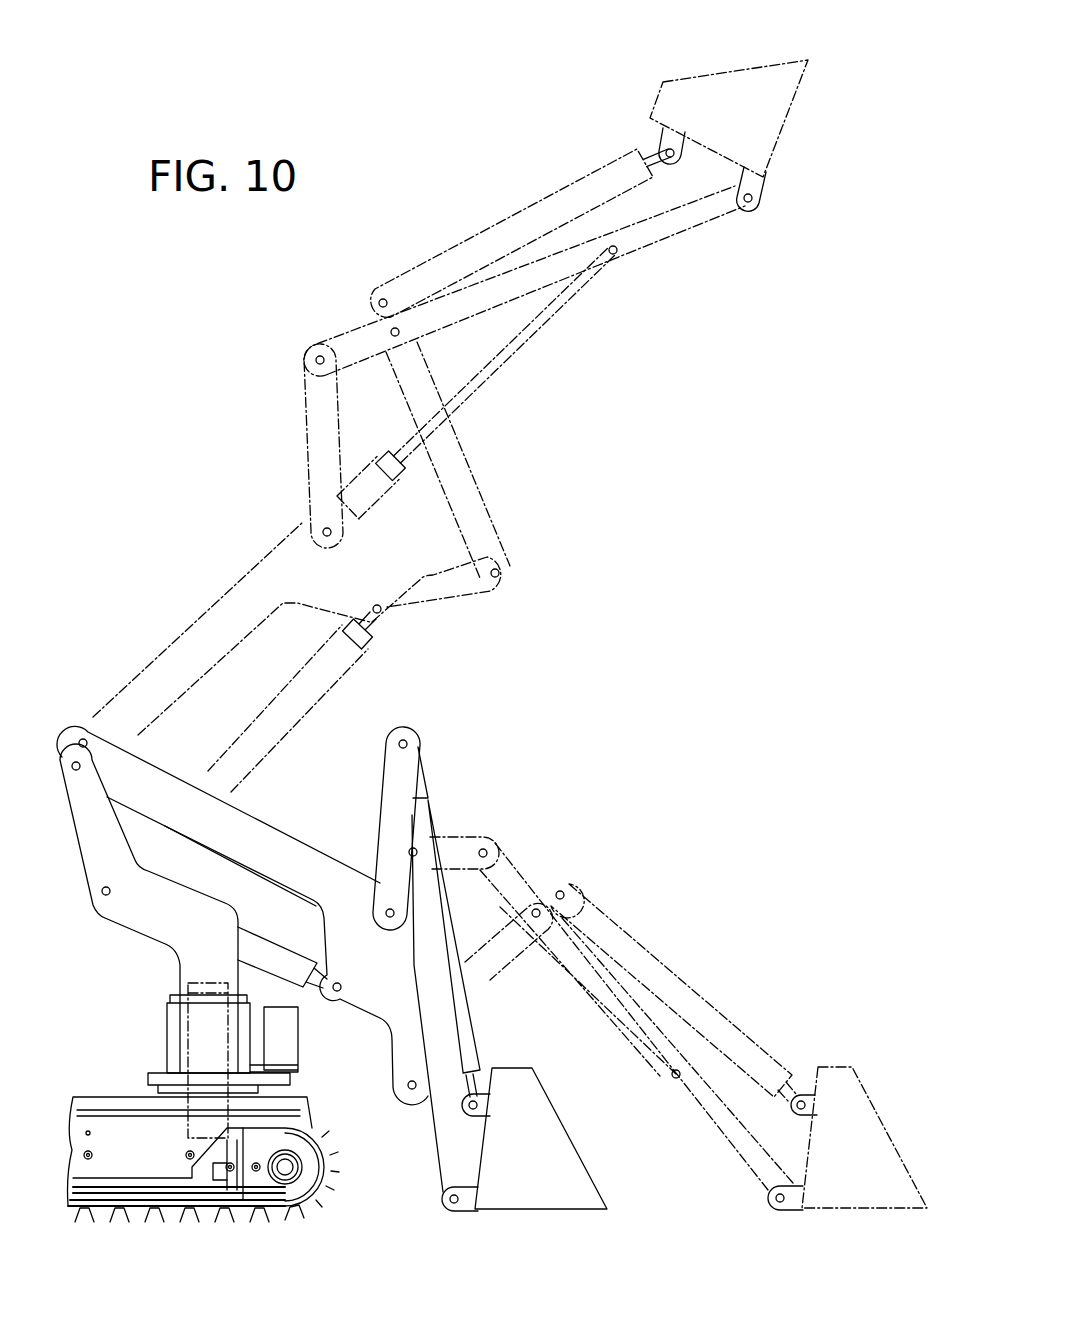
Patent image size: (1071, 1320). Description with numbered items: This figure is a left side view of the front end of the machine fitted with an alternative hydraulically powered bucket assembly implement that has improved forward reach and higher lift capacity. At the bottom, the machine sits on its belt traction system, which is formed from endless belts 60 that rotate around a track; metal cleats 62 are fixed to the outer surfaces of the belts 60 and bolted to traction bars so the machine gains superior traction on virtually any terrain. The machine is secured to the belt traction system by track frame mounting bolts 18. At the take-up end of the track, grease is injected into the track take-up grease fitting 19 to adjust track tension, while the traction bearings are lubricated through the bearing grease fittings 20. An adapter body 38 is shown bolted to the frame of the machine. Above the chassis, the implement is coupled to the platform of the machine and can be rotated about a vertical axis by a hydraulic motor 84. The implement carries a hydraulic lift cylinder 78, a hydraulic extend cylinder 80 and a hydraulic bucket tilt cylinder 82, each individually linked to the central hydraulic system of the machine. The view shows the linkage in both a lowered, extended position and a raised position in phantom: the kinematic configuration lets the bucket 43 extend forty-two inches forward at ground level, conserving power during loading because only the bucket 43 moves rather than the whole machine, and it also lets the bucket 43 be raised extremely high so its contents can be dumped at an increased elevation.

The track frame mounting bolts 18 is at (186, 1155).
The track take-up grease fitting 19 is at (228, 1172).
The bearing grease fittings 20 is at (255, 1172).
The adapter body 38 is at (297, 1121).
The bucket 43 is at (760, 82).
The endless belts 60 is at (142, 1206).
The metal cleats 62 is at (327, 1170).
The hydraulic lift cylinder 78 is at (352, 648).
The hydraulic extend cylinder 80 is at (380, 483).
The hydraulic bucket tilt cylinder 82 is at (472, 243).
The hydraulic motor 84 is at (288, 1032).